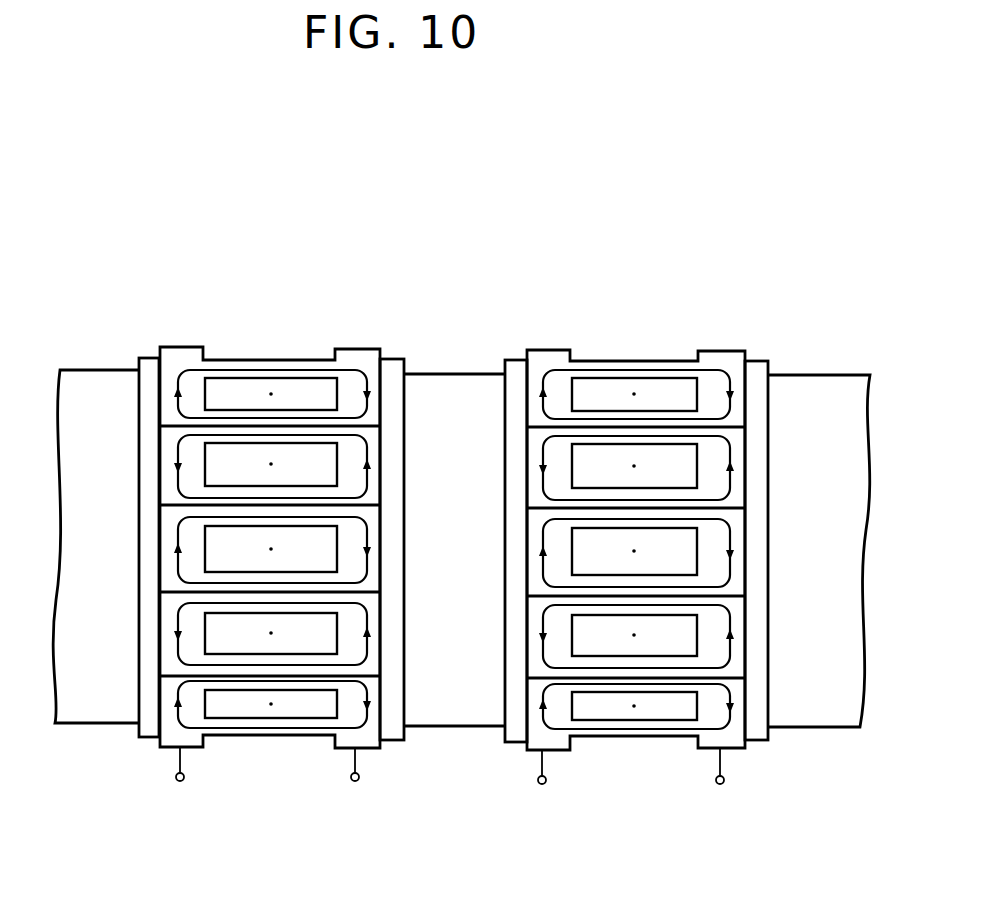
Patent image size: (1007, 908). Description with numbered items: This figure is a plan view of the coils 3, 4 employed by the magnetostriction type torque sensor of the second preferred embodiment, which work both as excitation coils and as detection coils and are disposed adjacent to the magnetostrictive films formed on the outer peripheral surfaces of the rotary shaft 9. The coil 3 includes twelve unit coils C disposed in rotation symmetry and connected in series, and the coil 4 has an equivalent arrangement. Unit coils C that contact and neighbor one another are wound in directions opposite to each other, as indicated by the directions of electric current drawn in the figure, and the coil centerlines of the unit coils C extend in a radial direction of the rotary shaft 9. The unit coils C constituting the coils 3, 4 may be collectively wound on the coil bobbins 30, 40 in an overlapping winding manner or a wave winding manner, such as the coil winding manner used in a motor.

The coil 3 is at (201, 350).
The coil 4 is at (553, 352).
The rotary shaft 9 is at (838, 398).
The coil bobbin 30 is at (148, 372).
The coil bobbin 40 is at (754, 372).
The unit coil C is at (352, 364).
The current path I is at (366, 404).